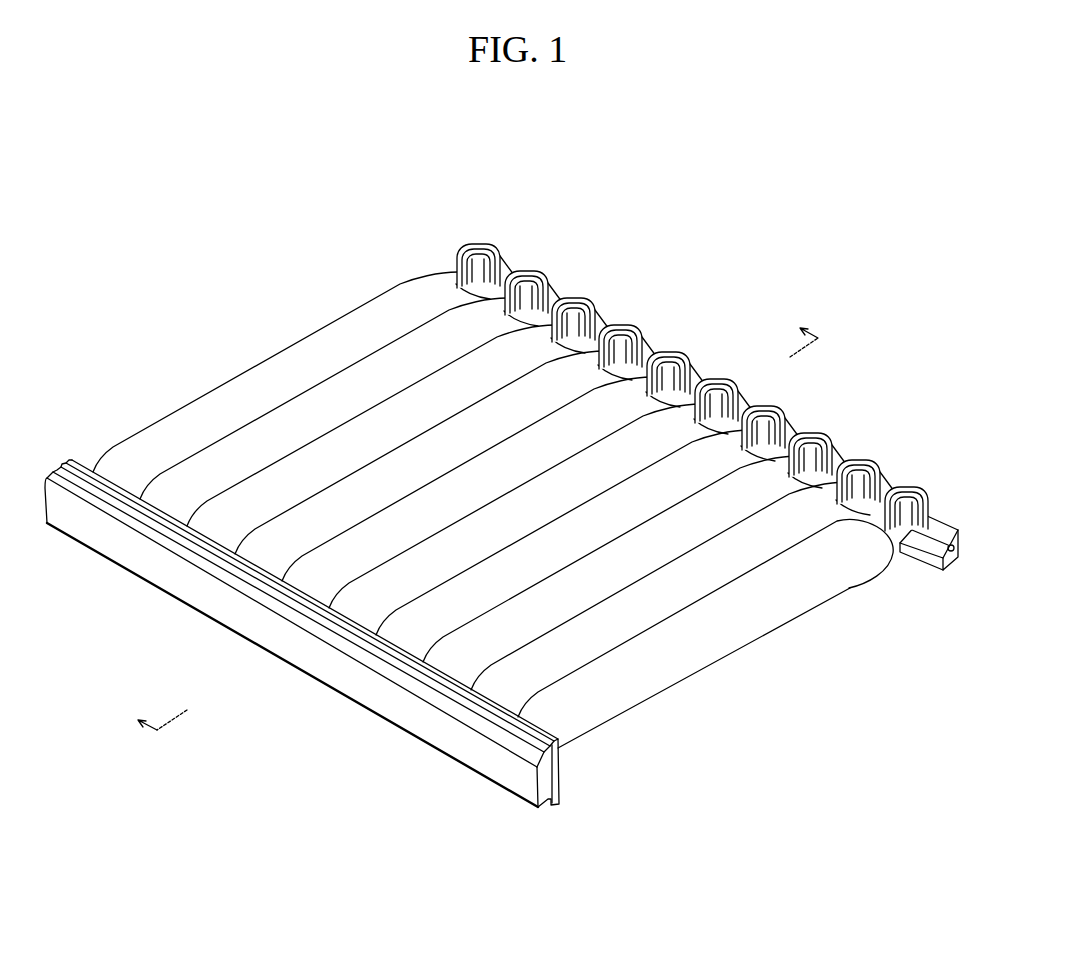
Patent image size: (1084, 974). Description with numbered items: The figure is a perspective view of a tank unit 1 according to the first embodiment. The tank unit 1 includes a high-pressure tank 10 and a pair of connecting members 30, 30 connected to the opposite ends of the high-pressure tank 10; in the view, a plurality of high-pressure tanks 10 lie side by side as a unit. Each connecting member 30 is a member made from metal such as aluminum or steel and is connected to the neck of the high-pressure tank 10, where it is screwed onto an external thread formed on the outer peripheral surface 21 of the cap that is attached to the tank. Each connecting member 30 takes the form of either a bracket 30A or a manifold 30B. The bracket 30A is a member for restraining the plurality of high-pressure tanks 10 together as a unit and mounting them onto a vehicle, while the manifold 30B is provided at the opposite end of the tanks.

The tank unit 1 is at (300, 185).
The high-pressure tank 10 is at (462, 383).
The outer peripheral surface 21 is at (493, 258).
The connecting member 30 is at (501, 538).
The bracket 30A is at (858, 472).
The manifold 30B is at (395, 712).